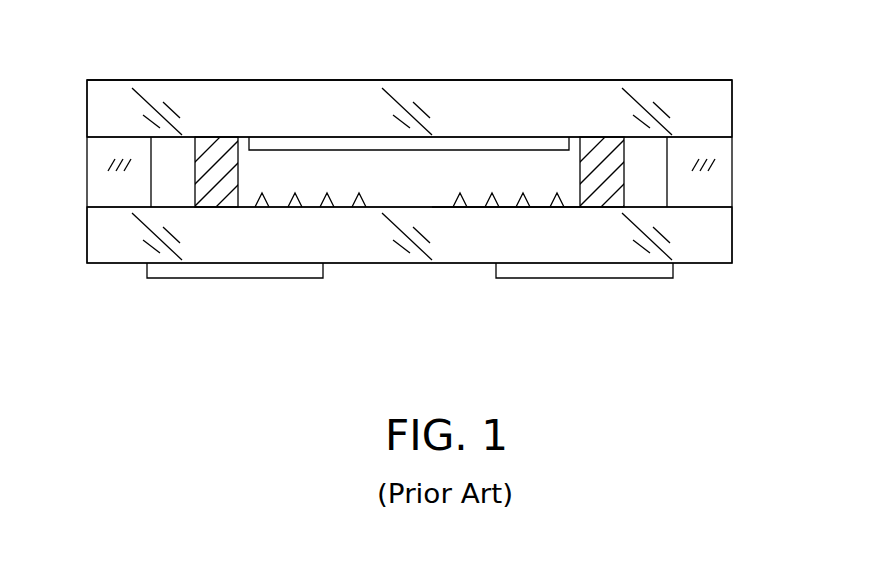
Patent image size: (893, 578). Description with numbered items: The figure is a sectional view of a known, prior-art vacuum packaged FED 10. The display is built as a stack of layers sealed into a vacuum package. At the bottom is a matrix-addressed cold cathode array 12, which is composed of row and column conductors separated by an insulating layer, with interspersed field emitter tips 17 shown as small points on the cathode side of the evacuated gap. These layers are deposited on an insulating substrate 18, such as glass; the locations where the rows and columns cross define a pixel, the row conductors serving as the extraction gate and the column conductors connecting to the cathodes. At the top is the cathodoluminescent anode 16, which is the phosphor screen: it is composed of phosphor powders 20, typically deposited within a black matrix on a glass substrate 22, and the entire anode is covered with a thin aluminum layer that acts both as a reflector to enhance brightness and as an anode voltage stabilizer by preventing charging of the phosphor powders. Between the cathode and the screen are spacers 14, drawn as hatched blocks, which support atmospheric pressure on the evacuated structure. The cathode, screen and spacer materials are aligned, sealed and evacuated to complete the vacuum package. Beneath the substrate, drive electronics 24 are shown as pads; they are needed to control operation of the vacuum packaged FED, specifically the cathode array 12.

The vacuum packaged FED 10 is at (337, 280).
The matrix-addressed cold cathode array 12 is at (80, 207).
The spacers 14 is at (643, 150).
The cathodoluminescent anode 16 is at (80, 82).
The field emitter tips 17 is at (523, 203).
The insulating substrate 18 is at (529, 251).
The phosphor powders 20 is at (462, 143).
The glass substrate 22 is at (262, 90).
The drive electronics 24 is at (218, 278).